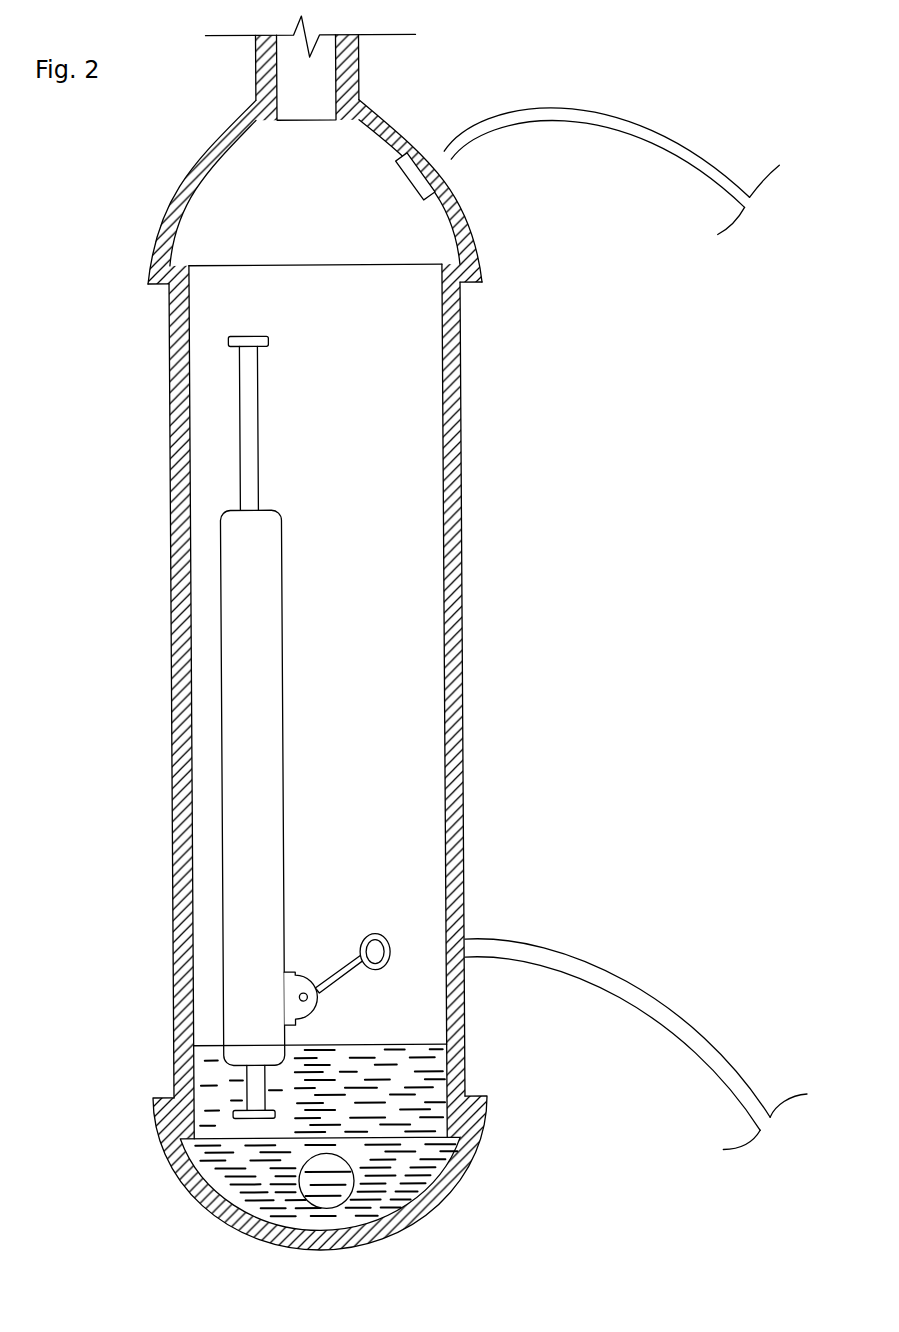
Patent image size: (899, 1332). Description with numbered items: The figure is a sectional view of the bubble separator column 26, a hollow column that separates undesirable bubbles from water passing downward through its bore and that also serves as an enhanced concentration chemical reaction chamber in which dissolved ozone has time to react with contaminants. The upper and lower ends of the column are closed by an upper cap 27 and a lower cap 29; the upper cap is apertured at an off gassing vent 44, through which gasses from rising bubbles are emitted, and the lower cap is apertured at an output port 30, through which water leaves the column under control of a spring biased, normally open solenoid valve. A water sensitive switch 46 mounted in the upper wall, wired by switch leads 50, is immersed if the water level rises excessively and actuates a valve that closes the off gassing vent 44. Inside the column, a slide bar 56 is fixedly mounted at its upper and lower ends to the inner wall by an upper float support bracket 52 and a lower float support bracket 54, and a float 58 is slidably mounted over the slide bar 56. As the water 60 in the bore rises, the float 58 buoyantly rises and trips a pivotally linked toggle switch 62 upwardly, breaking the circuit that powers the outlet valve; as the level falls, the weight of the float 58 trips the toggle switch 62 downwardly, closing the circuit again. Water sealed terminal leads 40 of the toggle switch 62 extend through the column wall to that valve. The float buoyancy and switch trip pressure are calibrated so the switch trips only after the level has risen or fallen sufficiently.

The bubble separator column 26 is at (450, 403).
The upper cap 27 is at (177, 183).
The lower cap 29 is at (160, 1122).
The output port 30 is at (200, 1190).
The terminal leads 40 is at (543, 950).
The off gassing vent 44 is at (253, 60).
The water sensitive switch 46 is at (458, 182).
The switch leads 50 is at (530, 118).
The upper float support bracket 52 is at (247, 340).
The lower float support bracket 54 is at (228, 1113).
The slide bar 56 is at (250, 462).
The float 58 is at (248, 658).
The water 60 is at (240, 1150).
The toggle switch 62 is at (312, 979).